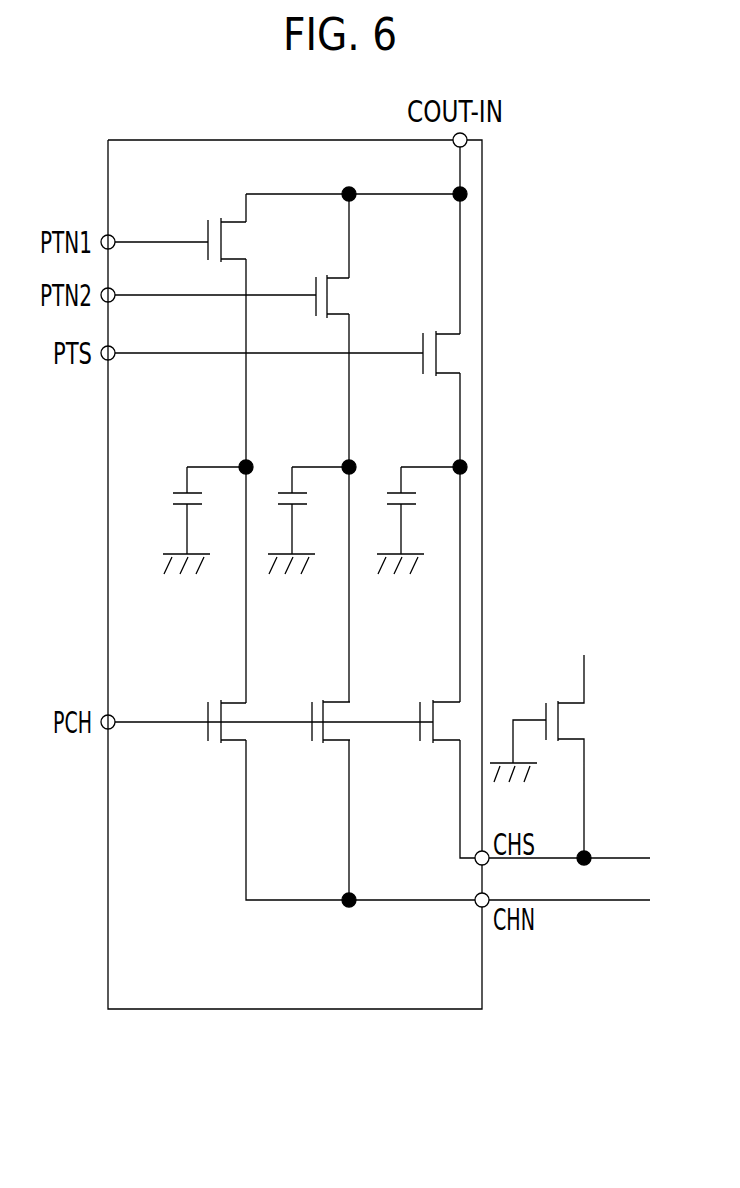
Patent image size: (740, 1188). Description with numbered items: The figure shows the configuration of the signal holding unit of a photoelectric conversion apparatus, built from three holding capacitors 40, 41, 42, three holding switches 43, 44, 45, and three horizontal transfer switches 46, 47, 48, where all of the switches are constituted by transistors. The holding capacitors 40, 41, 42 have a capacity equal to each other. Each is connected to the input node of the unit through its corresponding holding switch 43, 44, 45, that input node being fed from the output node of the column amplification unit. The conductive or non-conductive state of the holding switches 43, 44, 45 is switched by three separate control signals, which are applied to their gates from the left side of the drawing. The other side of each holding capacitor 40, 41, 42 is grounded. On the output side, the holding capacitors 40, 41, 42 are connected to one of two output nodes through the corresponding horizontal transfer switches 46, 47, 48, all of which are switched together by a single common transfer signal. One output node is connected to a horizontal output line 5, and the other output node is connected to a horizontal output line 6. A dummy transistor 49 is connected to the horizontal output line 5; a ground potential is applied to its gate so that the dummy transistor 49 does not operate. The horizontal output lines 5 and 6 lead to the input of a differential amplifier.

The holding capacitor 40 is at (187, 493).
The holding capacitor 41 is at (292, 493).
The holding capacitor 42 is at (401, 493).
The holding switch 43 is at (208, 230).
The holding switch 44 is at (316, 287).
The holding switch 45 is at (423, 343).
The horizontal transfer switch 46 is at (208, 704).
The horizontal transfer switch 47 is at (312, 704).
The horizontal transfer switch 48 is at (420, 704).
The dummy transistor 49 is at (584, 703).
The horizontal output line 5 is at (616, 855).
The horizontal output line 6 is at (620, 904).